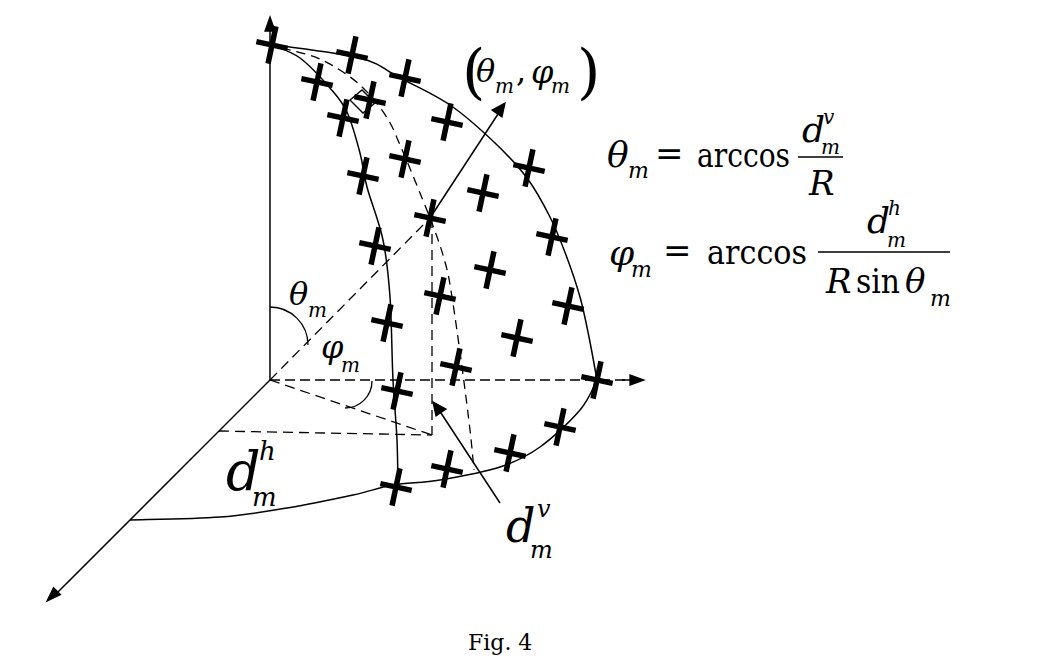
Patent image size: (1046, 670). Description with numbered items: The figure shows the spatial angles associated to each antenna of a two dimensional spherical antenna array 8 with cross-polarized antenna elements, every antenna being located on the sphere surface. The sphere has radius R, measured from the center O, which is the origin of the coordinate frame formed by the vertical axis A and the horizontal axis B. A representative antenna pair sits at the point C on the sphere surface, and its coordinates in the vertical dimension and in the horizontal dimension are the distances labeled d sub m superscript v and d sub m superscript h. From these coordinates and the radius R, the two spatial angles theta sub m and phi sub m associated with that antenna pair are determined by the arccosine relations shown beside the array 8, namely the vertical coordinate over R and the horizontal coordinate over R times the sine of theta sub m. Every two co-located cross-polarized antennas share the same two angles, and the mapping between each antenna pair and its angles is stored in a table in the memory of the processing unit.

The two dimensional spherical antenna array 8 is at (440, 266).
The vertical axis A is at (249, 198).
The horizontal axis B is at (158, 499).
The origin / sphere center O is at (325, 371).
The radius of the antenna array R is at (350, 299).
The antenna element position C is at (443, 269).